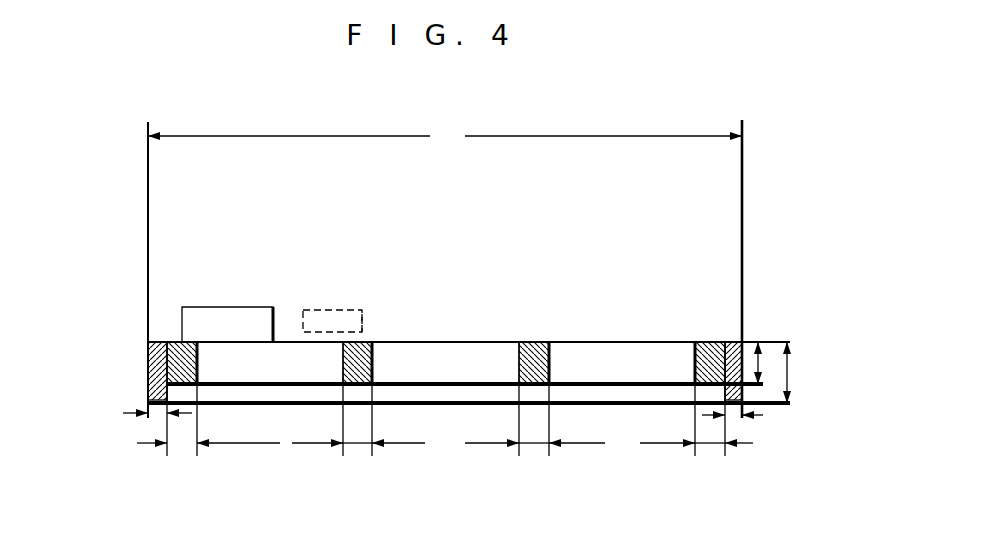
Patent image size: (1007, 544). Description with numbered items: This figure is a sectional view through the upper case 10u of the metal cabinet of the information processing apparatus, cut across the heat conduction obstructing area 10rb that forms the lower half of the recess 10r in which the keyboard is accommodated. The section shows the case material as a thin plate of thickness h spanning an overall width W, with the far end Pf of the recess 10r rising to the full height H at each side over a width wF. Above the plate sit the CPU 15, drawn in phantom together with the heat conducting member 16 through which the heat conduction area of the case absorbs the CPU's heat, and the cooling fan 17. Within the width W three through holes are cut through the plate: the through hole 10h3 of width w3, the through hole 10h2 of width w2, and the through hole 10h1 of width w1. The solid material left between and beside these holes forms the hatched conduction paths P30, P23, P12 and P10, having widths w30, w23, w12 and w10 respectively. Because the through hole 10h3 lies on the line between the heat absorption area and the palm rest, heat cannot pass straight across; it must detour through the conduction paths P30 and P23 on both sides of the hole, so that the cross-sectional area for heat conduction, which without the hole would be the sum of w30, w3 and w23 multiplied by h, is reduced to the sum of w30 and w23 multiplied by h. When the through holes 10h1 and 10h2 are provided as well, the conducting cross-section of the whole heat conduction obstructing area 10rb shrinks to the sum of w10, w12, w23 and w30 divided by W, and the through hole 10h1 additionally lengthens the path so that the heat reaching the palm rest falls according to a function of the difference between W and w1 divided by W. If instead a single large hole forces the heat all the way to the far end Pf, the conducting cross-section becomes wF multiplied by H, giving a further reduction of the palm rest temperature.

The upper case 10u is at (769, 180).
The heat conduction obstructing area 10rb is at (469, 269).
The through hole 10h3 is at (281, 362).
The through hole 10h2 is at (463, 358).
The through hole 10h1 is at (590, 358).
The recess 10r is at (660, 386).
The far end of the recess Pf is at (148, 362).
The conduction path P30 is at (179, 342).
The conduction path P23 is at (368, 360).
The conduction path P12 is at (531, 352).
The conduction path P10 is at (710, 350).
The cooling fan 17 is at (218, 318).
The CPU 15 is at (327, 309).
The heat conducting member 16 is at (364, 333).
The overall width W is at (445, 136).
The case height H is at (799, 372).
The conduction thickness h is at (768, 363).
The far end width wF is at (158, 416).
The width of conduction path P30 w30 is at (167, 443).
The width of through hole 10h3 w3 is at (270, 443).
The width of conduction path P23 w23 is at (357, 444).
The width of through hole 10h2 w2 is at (445, 443).
The width of conduction path P12 w12 is at (533, 444).
The width of through hole 10h1 w1 is at (622, 443).
The width of conduction path P10 w10 is at (721, 443).